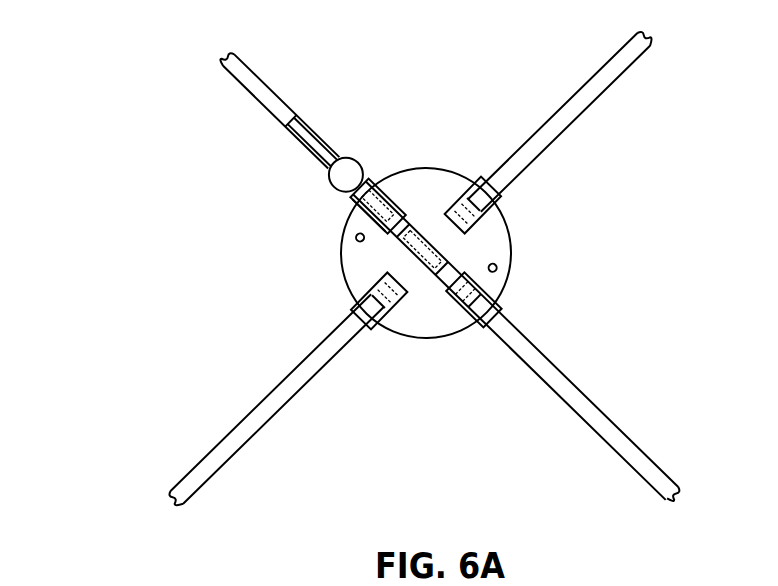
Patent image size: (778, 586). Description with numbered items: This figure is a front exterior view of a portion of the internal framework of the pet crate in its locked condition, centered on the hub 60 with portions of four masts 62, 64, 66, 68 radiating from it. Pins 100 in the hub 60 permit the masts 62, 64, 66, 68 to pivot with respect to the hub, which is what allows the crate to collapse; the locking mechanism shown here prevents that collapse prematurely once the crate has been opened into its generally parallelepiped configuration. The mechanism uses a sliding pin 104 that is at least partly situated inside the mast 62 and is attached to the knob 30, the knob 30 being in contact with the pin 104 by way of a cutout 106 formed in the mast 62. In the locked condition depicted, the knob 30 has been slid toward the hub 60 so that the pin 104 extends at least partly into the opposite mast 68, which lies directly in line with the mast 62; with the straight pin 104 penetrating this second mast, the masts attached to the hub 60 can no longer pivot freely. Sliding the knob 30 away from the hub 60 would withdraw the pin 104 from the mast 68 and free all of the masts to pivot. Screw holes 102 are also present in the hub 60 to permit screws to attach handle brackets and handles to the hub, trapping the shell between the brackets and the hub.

The knob 30 is at (347, 178).
The hub 60 is at (438, 183).
The mast 62 is at (261, 79).
The mast 64 is at (613, 63).
The mast 66 is at (272, 410).
The mast 68 is at (580, 413).
The pins 100 is at (378, 290).
The screw holes 102 is at (357, 240).
The pin 104 is at (356, 204).
The cutout 106 is at (293, 140).